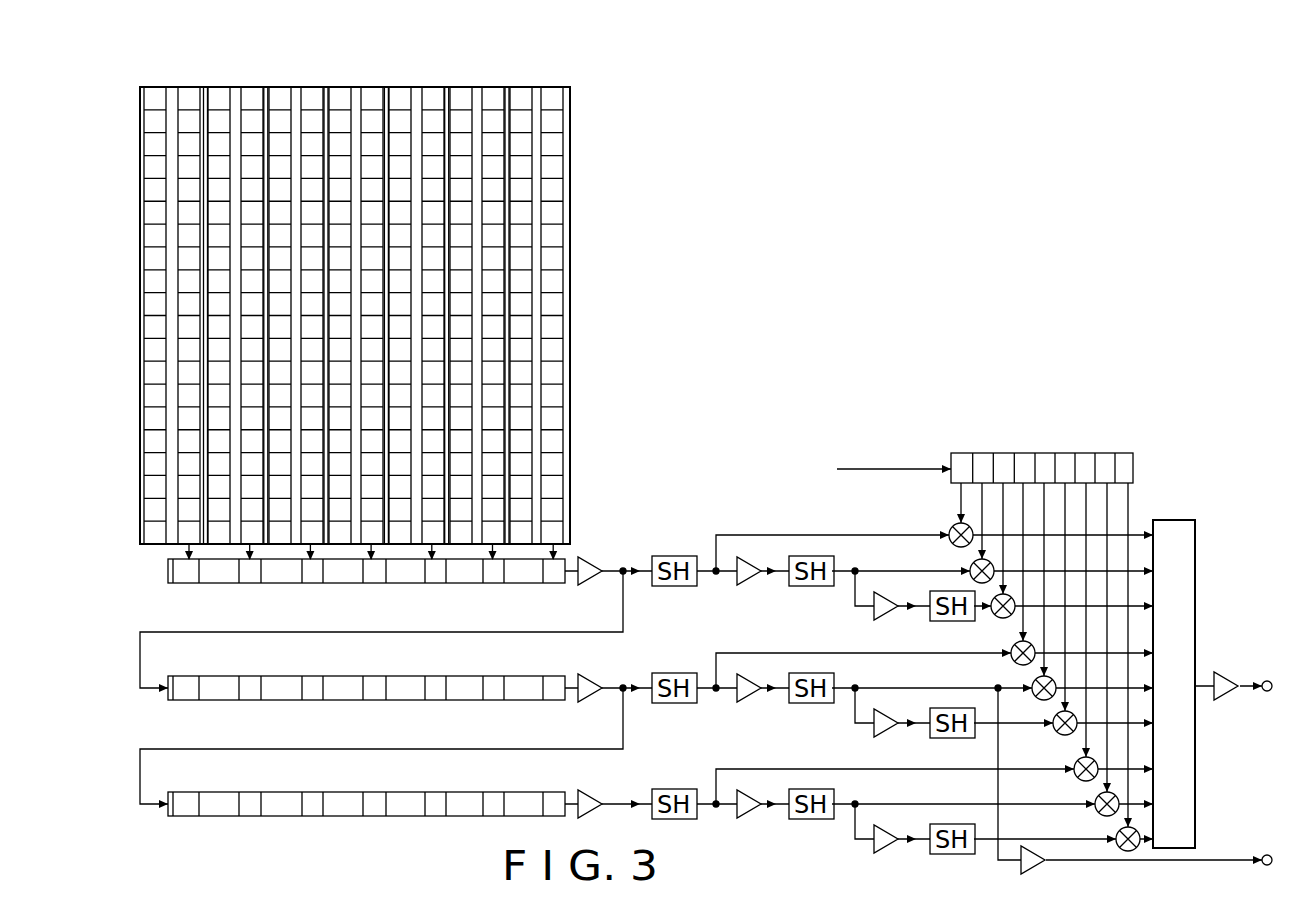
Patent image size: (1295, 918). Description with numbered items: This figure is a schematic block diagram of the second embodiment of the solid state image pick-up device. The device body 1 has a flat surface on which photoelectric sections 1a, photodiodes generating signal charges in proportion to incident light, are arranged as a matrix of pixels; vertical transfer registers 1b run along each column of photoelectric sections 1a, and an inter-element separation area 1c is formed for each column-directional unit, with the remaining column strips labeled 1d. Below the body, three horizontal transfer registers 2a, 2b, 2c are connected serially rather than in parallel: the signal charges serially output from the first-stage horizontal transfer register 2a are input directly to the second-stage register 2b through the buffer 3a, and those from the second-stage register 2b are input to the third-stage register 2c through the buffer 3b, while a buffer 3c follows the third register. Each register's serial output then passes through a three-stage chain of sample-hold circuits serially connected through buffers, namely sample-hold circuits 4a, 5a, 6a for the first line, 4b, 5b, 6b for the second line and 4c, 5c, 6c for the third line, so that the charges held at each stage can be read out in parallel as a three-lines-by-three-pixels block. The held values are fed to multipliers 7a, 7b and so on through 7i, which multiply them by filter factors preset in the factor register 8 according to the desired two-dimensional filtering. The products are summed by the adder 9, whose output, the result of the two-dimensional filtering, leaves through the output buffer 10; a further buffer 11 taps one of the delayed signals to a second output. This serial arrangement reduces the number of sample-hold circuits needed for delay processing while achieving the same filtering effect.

The solid state image pick-up device body 1 is at (359, 293).
The photoelectric section 1a is at (157, 94).
The vertical transfer register 1b is at (188, 94).
The inter-element separation area 1c is at (207, 92).
The vertical transfer line 1d is at (172, 92).
The horizontal transfer register 2a is at (172, 583).
The horizontal transfer register 2b is at (172, 700).
The horizontal transfer register 2c is at (172, 816).
The buffer 3a is at (596, 558).
The buffer 3b is at (596, 675).
The buffer 3c is at (596, 791).
The sample-hold circuit 4a is at (674, 556).
The sample-hold circuit 4b is at (676, 667).
The sample-hold circuit 4c is at (676, 784).
The sample-hold circuit 5a is at (815, 587).
The sample-hold circuit 5b is at (815, 704).
The sample-hold circuit 5c is at (815, 820).
The sample-hold circuit 6a is at (933, 622).
The sample-hold circuit 6b is at (933, 739).
The sample-hold circuit 6c is at (952, 824).
The multiplier 7a is at (952, 528).
The multiplier 7b is at (972, 566).
The multiplier 7i is at (1117, 835).
The factor register 8 is at (1134, 469).
The adder 9 is at (1197, 531).
The output buffer 10 is at (1227, 672).
The output amplifier 11 is at (1030, 846).